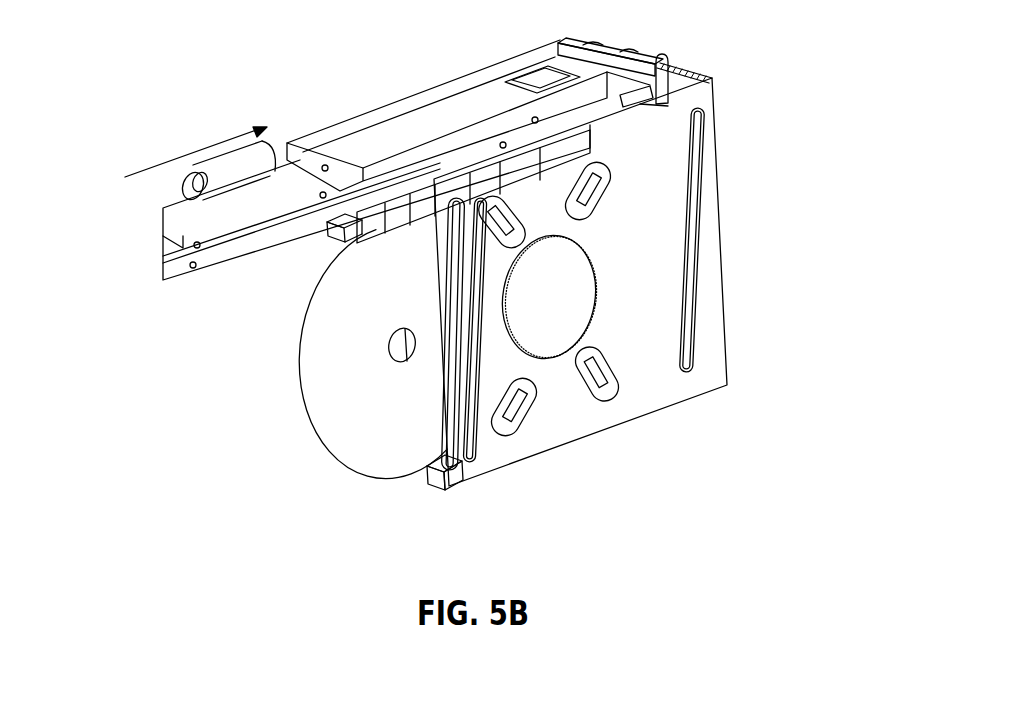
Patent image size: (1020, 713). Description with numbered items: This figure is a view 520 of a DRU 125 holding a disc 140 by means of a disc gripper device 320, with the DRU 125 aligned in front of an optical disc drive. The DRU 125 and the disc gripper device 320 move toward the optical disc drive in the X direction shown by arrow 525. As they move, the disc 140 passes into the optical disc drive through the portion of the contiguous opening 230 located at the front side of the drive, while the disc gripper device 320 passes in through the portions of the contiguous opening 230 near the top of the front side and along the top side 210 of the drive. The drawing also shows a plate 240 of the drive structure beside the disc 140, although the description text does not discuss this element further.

The view 520 is at (96, 124).
The arrow 525 is at (198, 152).
The DRU 125 is at (463, 117).
The top side 210 is at (680, 65).
The mounting plate 240 is at (642, 265).
The disc gripper device 320 is at (337, 233).
The disc 140 is at (297, 372).
The contiguous opening 230 is at (430, 470).